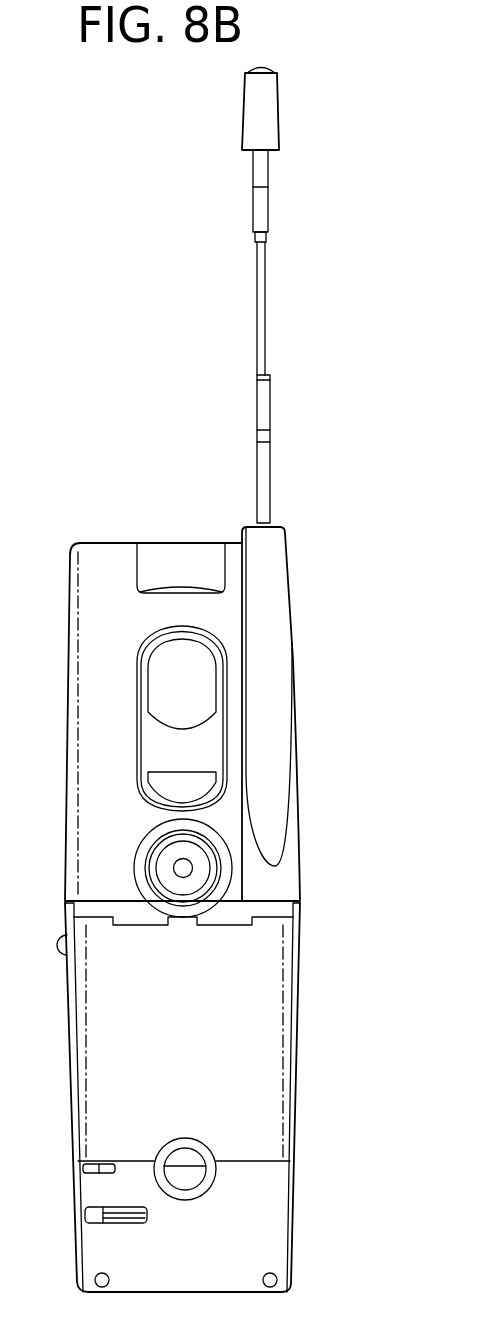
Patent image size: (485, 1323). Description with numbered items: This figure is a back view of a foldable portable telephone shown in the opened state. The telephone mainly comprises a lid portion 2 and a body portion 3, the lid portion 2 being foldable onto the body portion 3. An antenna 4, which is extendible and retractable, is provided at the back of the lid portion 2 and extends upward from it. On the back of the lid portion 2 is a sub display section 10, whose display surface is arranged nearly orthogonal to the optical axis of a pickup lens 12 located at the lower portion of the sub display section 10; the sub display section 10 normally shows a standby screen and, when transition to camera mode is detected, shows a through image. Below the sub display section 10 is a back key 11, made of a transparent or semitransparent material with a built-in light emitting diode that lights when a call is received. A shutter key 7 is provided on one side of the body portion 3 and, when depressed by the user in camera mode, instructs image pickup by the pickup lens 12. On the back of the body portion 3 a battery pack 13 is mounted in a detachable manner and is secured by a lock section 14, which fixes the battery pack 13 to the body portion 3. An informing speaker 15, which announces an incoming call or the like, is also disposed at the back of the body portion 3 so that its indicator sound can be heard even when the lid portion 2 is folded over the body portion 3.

The lid portion 2 is at (68, 623).
The body portion 3 is at (301, 1040).
The antenna 4 is at (278, 118).
The shutter key 7 is at (57, 945).
The sub display section 10 is at (155, 683).
The back key 11 is at (157, 787).
The pickup lens 12 is at (176, 872).
The battery pack 13 is at (95, 1027).
The lock section 14 is at (190, 1152).
The informing speaker 15 is at (112, 1223).